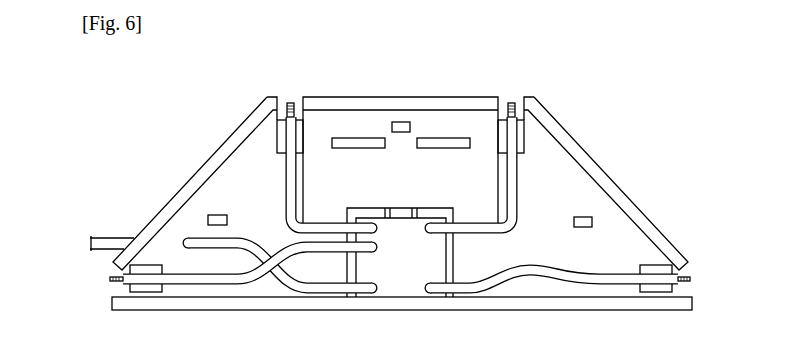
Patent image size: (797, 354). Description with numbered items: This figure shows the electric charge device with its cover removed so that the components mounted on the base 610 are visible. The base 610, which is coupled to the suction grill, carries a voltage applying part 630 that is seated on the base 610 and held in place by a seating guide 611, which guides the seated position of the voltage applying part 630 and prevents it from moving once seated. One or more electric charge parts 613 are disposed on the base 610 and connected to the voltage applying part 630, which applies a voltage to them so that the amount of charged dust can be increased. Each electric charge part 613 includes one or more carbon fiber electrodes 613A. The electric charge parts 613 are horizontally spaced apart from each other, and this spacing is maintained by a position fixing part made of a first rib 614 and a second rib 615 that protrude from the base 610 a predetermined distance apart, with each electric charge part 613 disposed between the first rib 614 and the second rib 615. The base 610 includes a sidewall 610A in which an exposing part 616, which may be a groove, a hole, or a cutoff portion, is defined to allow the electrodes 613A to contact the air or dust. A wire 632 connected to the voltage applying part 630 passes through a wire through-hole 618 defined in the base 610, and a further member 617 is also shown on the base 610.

The base 610 is at (535, 290).
The sidewall 610A is at (627, 205).
The seating guide 611 is at (465, 257).
The electric charge part 613 is at (518, 180).
The carbon fiber electrode 613A is at (510, 103).
The first rib 614 is at (497, 137).
The second rib 615 is at (518, 140).
The exposing part 616 is at (495, 110).
The fixing member 617 is at (593, 222).
The wire through-hole 618 is at (185, 241).
The voltage applying part 630 is at (403, 280).
The wire 632 is at (325, 284).